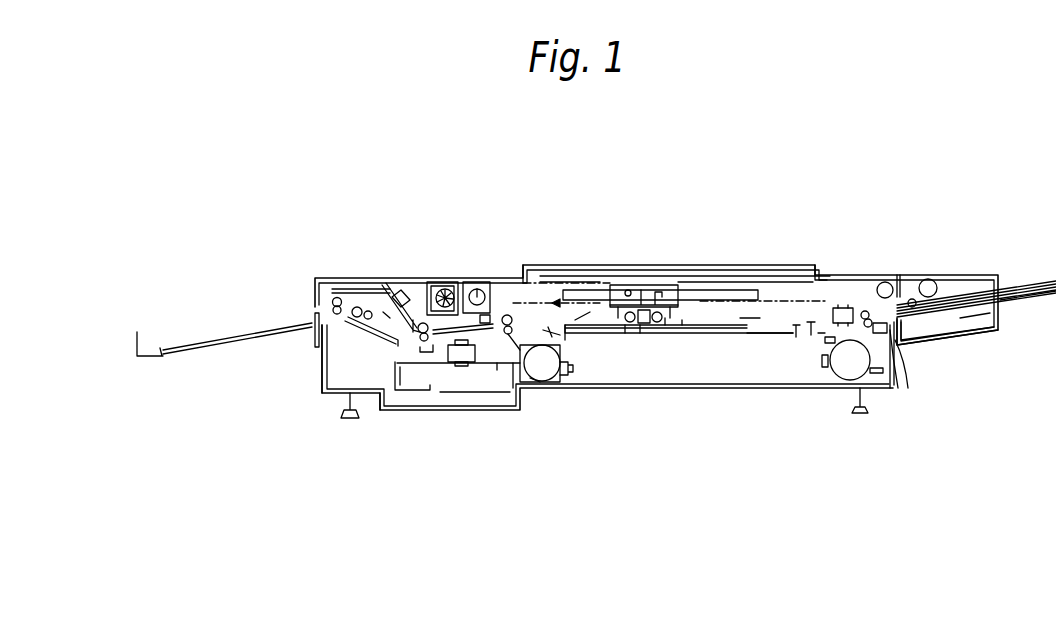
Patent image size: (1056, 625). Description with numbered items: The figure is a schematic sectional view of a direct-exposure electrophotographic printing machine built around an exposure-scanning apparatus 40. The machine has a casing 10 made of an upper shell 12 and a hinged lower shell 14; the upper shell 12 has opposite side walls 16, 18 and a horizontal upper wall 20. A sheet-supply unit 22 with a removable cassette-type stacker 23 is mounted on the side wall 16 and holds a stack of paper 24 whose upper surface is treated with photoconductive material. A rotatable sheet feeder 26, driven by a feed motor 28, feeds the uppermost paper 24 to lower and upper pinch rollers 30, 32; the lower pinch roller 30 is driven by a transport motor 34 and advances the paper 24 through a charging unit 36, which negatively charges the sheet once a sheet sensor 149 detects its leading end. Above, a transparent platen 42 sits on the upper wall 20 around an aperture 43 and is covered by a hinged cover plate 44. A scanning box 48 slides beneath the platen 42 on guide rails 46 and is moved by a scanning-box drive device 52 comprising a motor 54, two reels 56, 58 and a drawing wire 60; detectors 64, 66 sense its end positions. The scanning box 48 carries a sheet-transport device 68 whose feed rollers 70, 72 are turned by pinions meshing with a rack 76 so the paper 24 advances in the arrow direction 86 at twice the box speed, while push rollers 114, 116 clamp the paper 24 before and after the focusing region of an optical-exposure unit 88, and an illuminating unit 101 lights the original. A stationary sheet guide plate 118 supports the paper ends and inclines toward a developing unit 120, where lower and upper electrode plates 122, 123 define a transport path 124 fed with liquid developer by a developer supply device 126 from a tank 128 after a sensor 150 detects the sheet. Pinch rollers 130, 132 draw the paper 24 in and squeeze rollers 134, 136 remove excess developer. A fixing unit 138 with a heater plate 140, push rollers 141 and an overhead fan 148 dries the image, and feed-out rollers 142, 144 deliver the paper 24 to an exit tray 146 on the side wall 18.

The casing 10 is at (884, 269).
The upper shell 12 is at (833, 270).
The lower shell 14 is at (803, 388).
The side wall 16 is at (905, 328).
The side wall 18 is at (314, 283).
The upper wall 20 is at (445, 277).
The sheet-supply unit 22 is at (965, 292).
The cassette-type stacker 23 is at (970, 315).
The paper 24 is at (1015, 290).
The sheet feeder 26 is at (934, 285).
The feed motor 28 is at (936, 282).
The lower pinch roller 30 is at (888, 370).
The upper pinch roller 32 is at (897, 353).
The transport motor 34 is at (543, 376).
The charging unit 36 is at (843, 304).
The exposure-scanning apparatus 40 is at (709, 262).
The transparent platen 42 is at (600, 275).
The aperture 43 is at (815, 272).
The cover plate 44 is at (650, 268).
The guide rails 46 is at (737, 290).
The scanning box 48 is at (667, 297).
The scanning-box drive device 52 is at (543, 265).
The motor 54 is at (505, 315).
The reel 56 is at (475, 283).
The reel 58 is at (907, 283).
The drawing wire 60 is at (562, 274).
The detector 64 is at (821, 372).
The detector 66 is at (585, 336).
The sheet-transport device 68 is at (655, 332).
The feed roller 70 is at (668, 322).
The feed roller 72 is at (641, 332).
The rack 76 is at (740, 325).
The arrow direction 86 is at (596, 334).
The optical-exposure unit 88 is at (673, 313).
The illuminating unit 101 is at (629, 289).
The push roller 114 is at (685, 326).
The push roller 116 is at (625, 336).
The stationary sheet guide plate 118 is at (770, 333).
The developing unit 120 is at (462, 326).
The lower electrode plate 122 is at (437, 364).
The upper electrode plate 123 is at (430, 283).
The transport path 124 is at (477, 356).
The developer supply device 126 is at (520, 286).
The tank 128 is at (458, 398).
The lower pinch roller 130 is at (518, 364).
The upper pinch roller 132 is at (537, 383).
The lower squeeze roller 134 is at (415, 412).
The upper squeeze roller 136 is at (397, 404).
The fixing unit 138 is at (370, 302).
The heater plate 140 is at (377, 331).
The push rollers 141 is at (353, 295).
The lower feed-out roller 142 is at (333, 314).
The upper feed-out roller 144 is at (333, 305).
The exit tray 146 is at (198, 348).
The fan 148 is at (372, 300).
The sheet sensor 149 is at (855, 395).
The sensor 150 is at (497, 366).